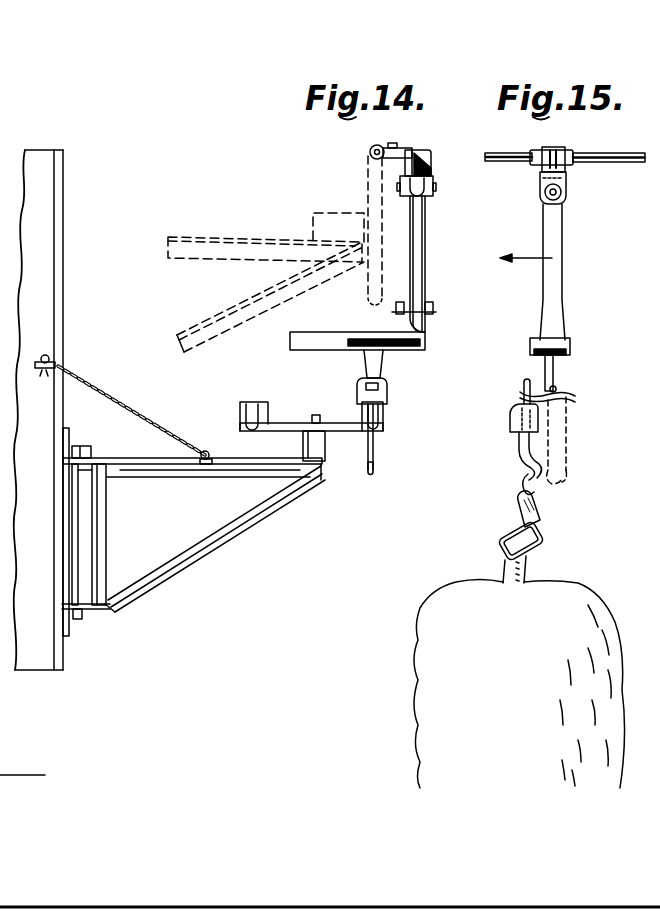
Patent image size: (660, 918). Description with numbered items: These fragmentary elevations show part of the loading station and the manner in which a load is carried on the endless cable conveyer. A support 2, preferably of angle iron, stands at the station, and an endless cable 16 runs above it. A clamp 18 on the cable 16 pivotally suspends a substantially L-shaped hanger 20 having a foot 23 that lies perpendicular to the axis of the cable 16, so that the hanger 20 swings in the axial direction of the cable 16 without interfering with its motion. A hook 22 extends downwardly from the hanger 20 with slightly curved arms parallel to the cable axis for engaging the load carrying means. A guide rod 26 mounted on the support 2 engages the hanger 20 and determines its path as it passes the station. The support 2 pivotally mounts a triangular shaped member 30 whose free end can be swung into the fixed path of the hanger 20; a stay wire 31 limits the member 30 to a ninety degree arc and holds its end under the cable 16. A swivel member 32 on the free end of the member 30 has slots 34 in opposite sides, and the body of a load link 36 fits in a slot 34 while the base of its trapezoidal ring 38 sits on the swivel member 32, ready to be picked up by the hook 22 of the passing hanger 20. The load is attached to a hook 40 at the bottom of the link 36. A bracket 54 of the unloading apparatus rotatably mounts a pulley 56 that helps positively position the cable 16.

In FIG. 14, the support 2 is at (47, 275).
In FIG. 14, the endless cable 16 is at (371, 150).
In FIG. 15, the endless cable 16 is at (626, 160).
In FIG. 14, the clamp 18 is at (412, 150).
In FIG. 15, the clamp 18 is at (560, 152).
In FIG. 14, the hanger 20 is at (413, 282).
In FIG. 15, the hanger 20 is at (553, 290).
In FIG. 14, the hook 22 is at (376, 362).
In FIG. 15, the hook 22 is at (554, 372).
In FIG. 14, the foot 23 is at (300, 343).
In FIG. 15, the foot 23 is at (570, 348).
In FIG. 14, the guide rod 26 is at (402, 314).
In FIG. 14, the triangular shaped member 30 is at (206, 534).
In FIG. 14, the stay wire 31 is at (113, 404).
In FIG. 14, the swivel member 32 is at (280, 414).
In FIG. 15, the swivel member 32 is at (510, 420).
In FIG. 14, the slot 34 is at (247, 404).
In FIG. 14, the load link 36 is at (375, 448).
In FIG. 15, the load link 36 is at (518, 446).
In FIG. 14, the trapezoidal ring 38 is at (388, 390).
In FIG. 15, the trapezoidal ring 38 is at (522, 400).
In FIG. 14, the hook 40 is at (374, 470).
In FIG. 15, the hook 40 is at (522, 478).
In FIG. 14, the bracket 54 is at (215, 242).
In FIG. 14, the pulley 56 is at (366, 182).